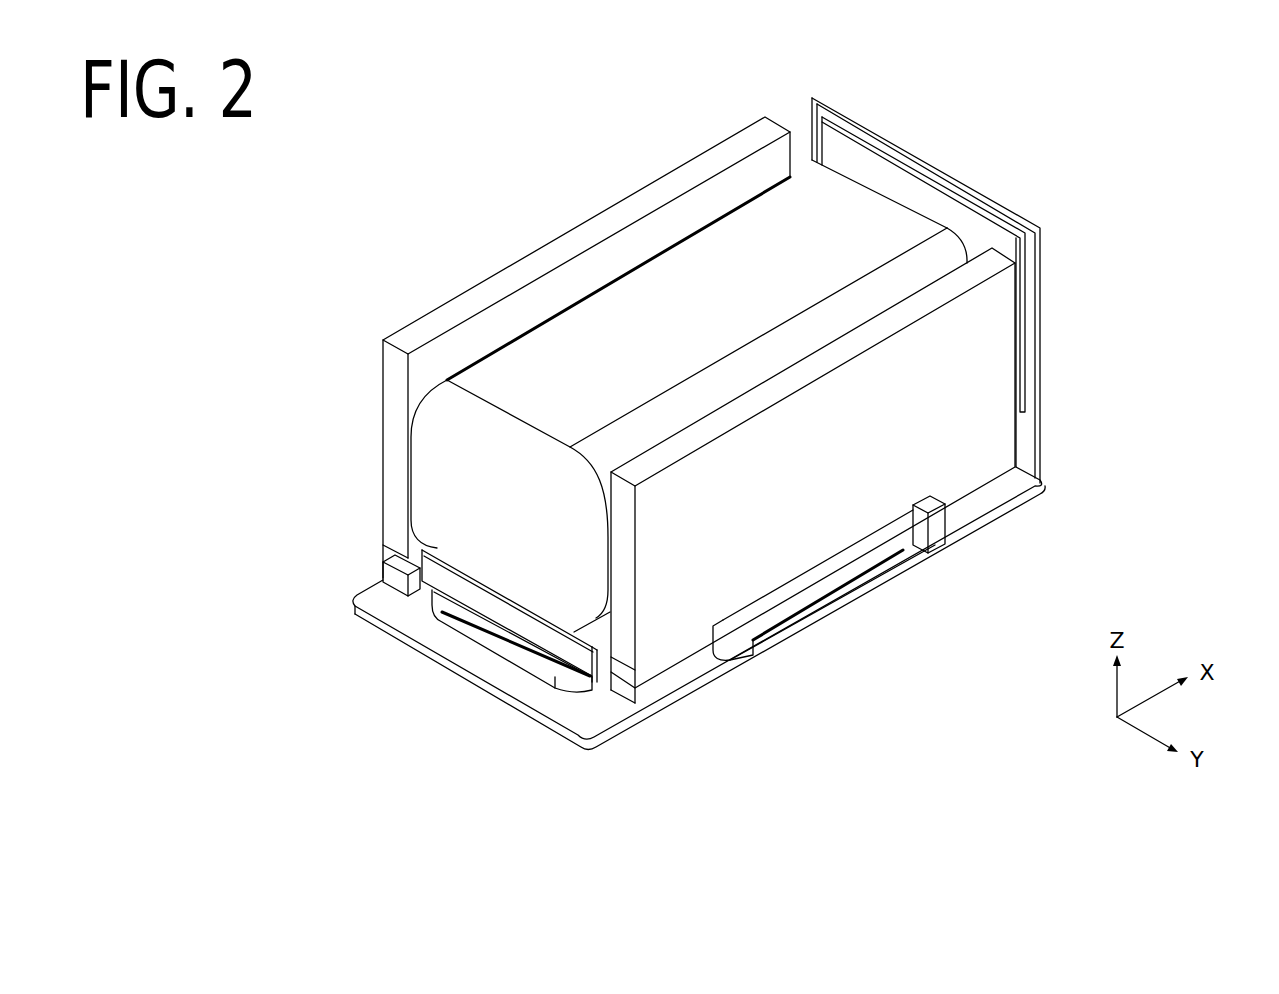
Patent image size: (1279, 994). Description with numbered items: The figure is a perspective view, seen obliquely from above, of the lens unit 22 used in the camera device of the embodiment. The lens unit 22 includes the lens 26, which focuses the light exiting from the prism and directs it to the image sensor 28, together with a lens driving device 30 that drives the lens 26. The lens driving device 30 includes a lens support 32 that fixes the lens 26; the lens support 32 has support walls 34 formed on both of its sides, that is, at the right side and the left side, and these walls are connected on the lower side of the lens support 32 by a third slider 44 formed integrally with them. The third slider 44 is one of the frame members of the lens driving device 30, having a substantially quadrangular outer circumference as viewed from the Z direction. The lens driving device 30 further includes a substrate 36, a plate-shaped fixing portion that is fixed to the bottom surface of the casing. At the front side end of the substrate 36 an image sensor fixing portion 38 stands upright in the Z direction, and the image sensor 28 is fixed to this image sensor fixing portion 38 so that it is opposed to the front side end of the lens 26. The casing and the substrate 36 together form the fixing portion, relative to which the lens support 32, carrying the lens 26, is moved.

The lens unit 22 is at (1098, 160).
The lens 26 is at (710, 265).
The image sensor 28 is at (960, 214).
The lens driving device 30 is at (696, 704).
The lens support 32 is at (405, 318).
The support wall 34 is at (532, 262).
The substrate 36 is at (597, 728).
The image sensor fixing portion 38 is at (1033, 441).
The third slider 44 is at (405, 550).